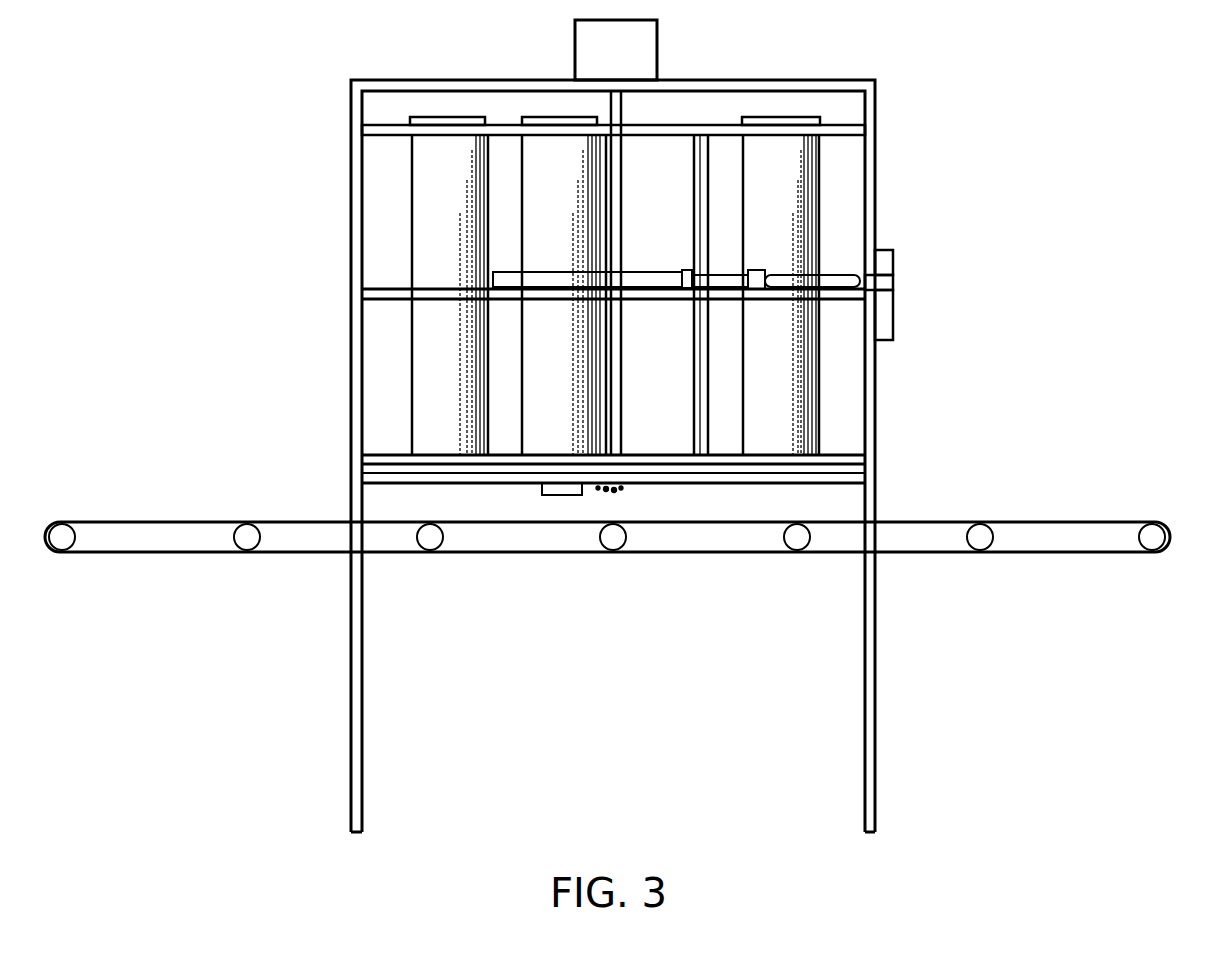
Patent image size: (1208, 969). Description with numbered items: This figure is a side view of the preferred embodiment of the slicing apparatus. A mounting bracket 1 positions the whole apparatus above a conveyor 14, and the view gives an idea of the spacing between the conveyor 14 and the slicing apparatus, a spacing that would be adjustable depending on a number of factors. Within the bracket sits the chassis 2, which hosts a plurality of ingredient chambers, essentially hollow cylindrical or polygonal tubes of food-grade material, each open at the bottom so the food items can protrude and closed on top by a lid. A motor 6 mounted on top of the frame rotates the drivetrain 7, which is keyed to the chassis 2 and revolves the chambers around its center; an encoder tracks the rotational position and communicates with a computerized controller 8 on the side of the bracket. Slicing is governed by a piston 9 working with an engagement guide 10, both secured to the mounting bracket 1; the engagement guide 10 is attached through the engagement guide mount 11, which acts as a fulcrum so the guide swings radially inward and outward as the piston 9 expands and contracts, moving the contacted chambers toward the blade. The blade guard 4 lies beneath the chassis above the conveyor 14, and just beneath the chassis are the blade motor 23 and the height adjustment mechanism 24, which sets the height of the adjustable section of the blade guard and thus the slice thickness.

The mounting bracket 1 is at (877, 405).
The chassis 2 is at (673, 129).
The blade guard 4 is at (790, 474).
The motor 6 is at (621, 64).
The drivetrain 7 is at (624, 121).
The computerized controller 8 is at (893, 262).
The piston 9 is at (837, 276).
The engagement guide 10 is at (631, 283).
The engagement guide mount 11 is at (687, 270).
The conveyor 14 is at (1137, 522).
The blade motor 23 is at (560, 496).
The height adjustment mechanism 24 is at (626, 491).